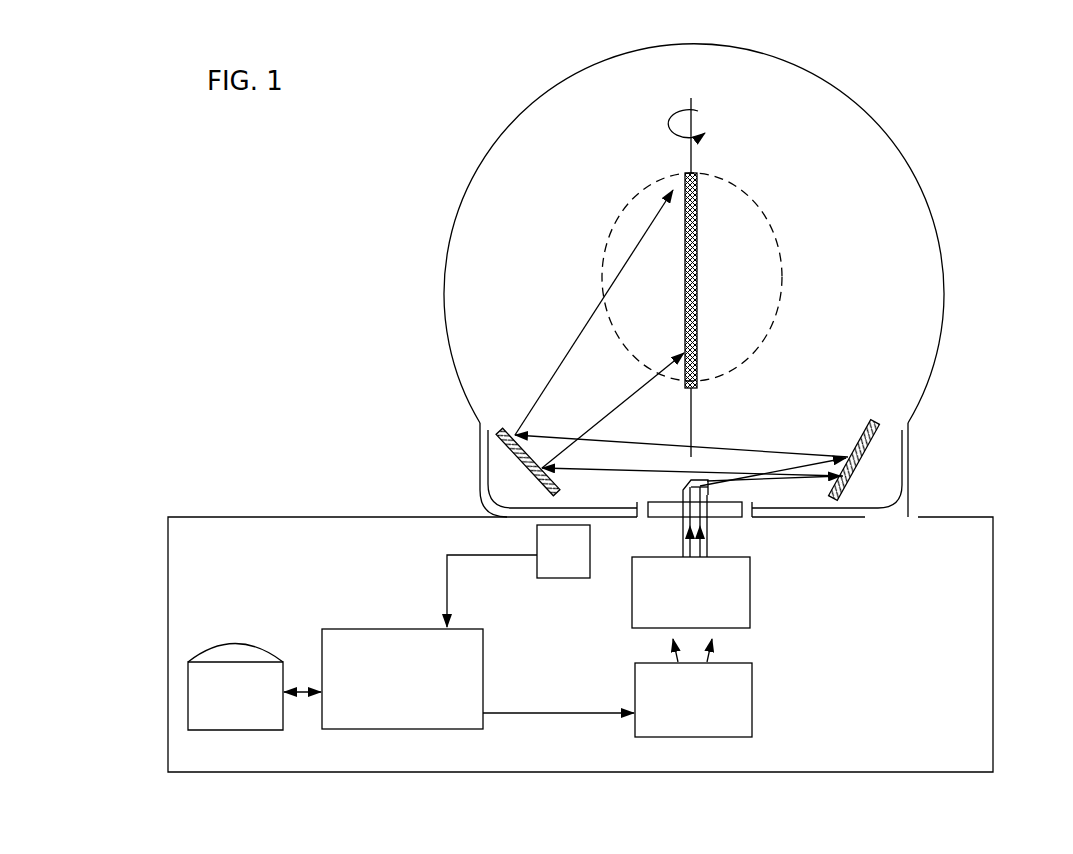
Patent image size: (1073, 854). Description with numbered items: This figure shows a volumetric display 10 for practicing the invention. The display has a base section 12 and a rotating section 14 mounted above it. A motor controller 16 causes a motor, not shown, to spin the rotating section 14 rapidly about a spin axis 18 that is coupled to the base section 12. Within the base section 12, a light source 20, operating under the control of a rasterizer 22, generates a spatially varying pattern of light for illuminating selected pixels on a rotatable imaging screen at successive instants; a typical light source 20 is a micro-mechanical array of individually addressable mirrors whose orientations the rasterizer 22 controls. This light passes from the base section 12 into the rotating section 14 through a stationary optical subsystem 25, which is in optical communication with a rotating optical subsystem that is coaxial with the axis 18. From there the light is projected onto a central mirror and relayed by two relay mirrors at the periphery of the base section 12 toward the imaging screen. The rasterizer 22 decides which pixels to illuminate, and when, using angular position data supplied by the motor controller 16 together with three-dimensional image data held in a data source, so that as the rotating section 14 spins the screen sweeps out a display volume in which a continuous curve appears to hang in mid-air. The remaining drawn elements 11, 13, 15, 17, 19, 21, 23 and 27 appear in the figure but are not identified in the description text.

The volumetric display 10 is at (984, 422).
The housing 11 is at (993, 612).
The base section 12 is at (940, 300).
The motor controller 13 is at (537, 537).
The rotating section 14 is at (697, 210).
The spatial light modulator 15 is at (691, 592).
The motor controller 16 is at (693, 408).
The window 17 is at (723, 519).
The spin axis 18 is at (752, 713).
The lens 19 is at (693, 484).
The light source 20 is at (360, 729).
The first mirror 21 is at (871, 423).
The rasterizer 22 is at (683, 356).
The second mirror 23 is at (510, 428).
The stationary optical subsystem 25 is at (243, 642).
The image volume 27 is at (780, 275).